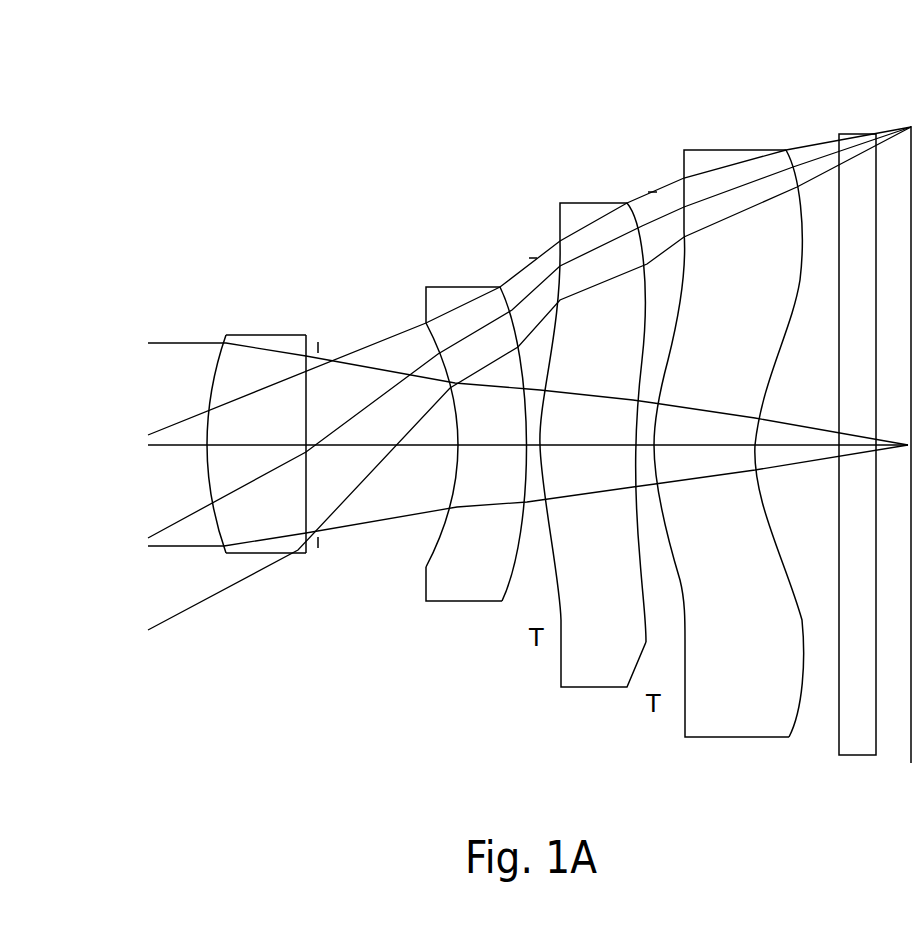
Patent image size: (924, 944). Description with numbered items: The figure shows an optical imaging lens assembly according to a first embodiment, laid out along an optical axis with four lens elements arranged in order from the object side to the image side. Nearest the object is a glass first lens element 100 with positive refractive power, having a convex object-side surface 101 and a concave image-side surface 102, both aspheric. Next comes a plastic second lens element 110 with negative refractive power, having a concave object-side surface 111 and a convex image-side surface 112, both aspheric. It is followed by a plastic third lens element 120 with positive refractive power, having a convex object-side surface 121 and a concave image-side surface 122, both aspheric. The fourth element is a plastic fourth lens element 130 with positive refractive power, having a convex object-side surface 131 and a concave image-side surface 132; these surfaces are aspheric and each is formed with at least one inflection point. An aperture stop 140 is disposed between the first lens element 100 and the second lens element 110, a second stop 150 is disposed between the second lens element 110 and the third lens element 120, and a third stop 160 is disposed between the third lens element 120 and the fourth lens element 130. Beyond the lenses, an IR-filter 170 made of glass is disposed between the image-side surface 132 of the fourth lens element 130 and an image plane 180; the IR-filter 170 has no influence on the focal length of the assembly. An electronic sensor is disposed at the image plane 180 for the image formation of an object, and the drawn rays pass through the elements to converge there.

The first lens element 100 is at (196, 411).
The object-side surface of first lens element 101 is at (206, 469).
The image-side surface of first lens element 102 is at (302, 477).
The second lens element 110 is at (441, 429).
The object-side surface of second lens element 111 is at (449, 511).
The image-side surface of second lens element 112 is at (512, 541).
The third lens element 120 is at (576, 449).
The object-side surface of third lens element 121 is at (553, 538).
The image-side surface of third lens element 122 is at (639, 593).
The fourth lens element 130 is at (729, 441).
The object-side surface of fourth lens element 131 is at (683, 562).
The image-side surface of fourth lens element 132 is at (794, 601).
The aperture stop 140 is at (318, 341).
The second stop 150 is at (531, 256).
The third stop 160 is at (652, 190).
The IR-filter 170 is at (858, 216).
The image plane 180 is at (908, 172).